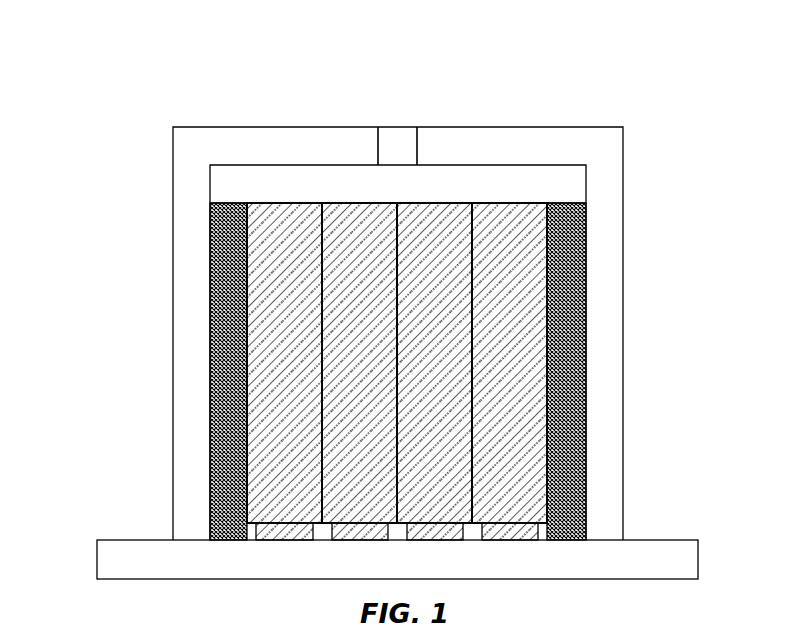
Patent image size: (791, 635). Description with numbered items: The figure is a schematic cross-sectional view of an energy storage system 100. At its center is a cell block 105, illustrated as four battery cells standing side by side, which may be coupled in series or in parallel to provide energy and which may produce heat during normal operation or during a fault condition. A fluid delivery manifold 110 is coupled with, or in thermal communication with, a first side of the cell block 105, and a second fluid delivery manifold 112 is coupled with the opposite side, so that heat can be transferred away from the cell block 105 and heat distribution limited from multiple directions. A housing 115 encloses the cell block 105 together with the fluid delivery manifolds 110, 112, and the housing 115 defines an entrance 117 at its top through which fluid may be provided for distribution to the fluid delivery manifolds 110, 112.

The energy storage system 100 is at (241, 63).
The housing 115 is at (283, 127).
The entrance 117 is at (395, 127).
The cell block 105 is at (503, 202).
The second fluid delivery manifold 112 is at (209, 285).
The fluid delivery manifold 110 is at (587, 285).